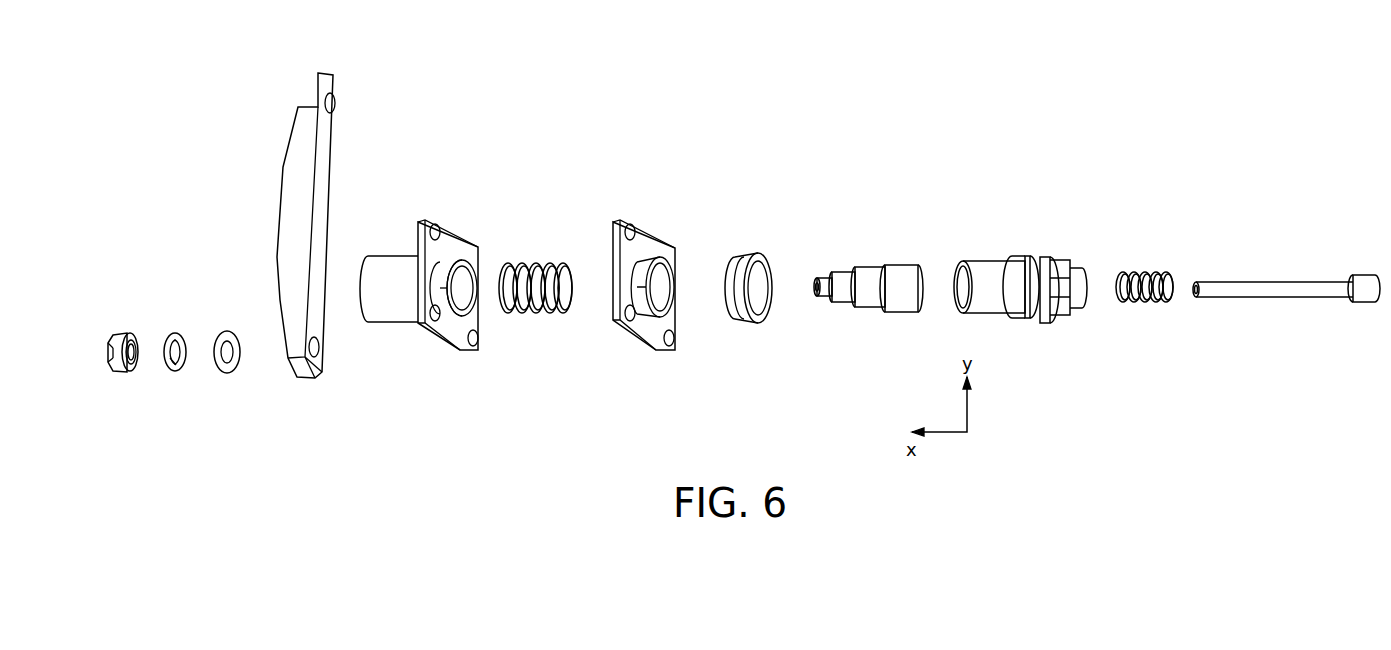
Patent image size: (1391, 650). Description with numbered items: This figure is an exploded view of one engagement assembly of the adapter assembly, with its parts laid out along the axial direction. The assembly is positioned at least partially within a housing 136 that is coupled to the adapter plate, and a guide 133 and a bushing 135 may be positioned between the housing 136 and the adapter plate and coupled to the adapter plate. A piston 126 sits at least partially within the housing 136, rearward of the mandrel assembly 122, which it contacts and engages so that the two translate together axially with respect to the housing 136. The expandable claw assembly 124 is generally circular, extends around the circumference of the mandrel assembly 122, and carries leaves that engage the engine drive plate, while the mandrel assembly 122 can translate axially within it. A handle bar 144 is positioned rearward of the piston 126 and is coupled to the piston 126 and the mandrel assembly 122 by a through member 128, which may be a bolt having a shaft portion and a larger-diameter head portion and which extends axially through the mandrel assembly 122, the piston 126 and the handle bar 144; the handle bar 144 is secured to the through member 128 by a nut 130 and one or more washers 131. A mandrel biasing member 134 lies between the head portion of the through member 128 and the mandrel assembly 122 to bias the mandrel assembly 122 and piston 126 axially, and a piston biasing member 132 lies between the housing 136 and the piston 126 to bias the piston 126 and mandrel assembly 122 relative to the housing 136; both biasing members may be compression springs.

The mandrel assembly 122 is at (996, 237).
The expandable claw assembly 124 is at (1063, 239).
The piston 126 is at (868, 234).
The through member 128 is at (1303, 278).
The nut 130 is at (122, 327).
The washers 131 is at (202, 298).
The piston biasing member 132 is at (548, 262).
The guide 133 is at (627, 222).
The mandrel biasing member 134 is at (1144, 235).
The bushing 135 is at (760, 252).
The housing 136 is at (433, 222).
The handle bar 144 is at (328, 70).